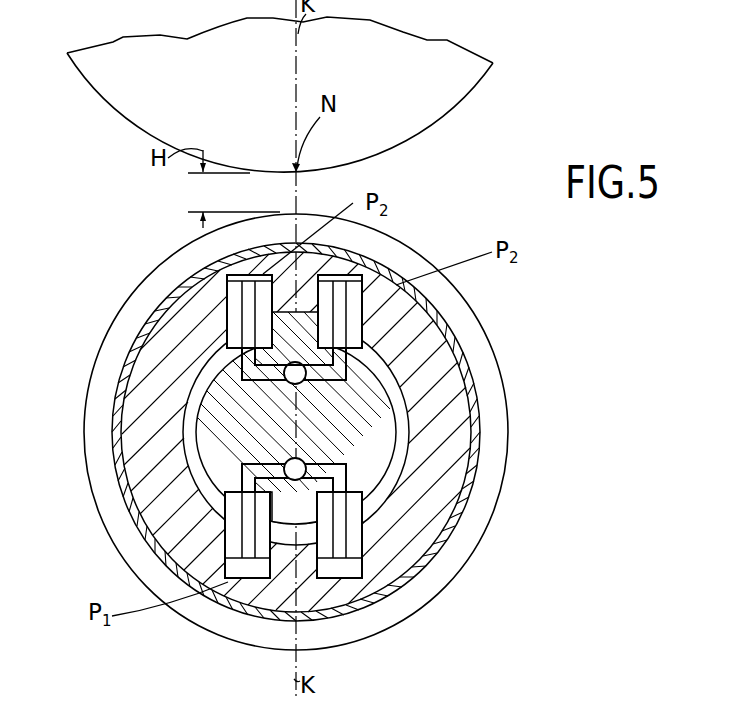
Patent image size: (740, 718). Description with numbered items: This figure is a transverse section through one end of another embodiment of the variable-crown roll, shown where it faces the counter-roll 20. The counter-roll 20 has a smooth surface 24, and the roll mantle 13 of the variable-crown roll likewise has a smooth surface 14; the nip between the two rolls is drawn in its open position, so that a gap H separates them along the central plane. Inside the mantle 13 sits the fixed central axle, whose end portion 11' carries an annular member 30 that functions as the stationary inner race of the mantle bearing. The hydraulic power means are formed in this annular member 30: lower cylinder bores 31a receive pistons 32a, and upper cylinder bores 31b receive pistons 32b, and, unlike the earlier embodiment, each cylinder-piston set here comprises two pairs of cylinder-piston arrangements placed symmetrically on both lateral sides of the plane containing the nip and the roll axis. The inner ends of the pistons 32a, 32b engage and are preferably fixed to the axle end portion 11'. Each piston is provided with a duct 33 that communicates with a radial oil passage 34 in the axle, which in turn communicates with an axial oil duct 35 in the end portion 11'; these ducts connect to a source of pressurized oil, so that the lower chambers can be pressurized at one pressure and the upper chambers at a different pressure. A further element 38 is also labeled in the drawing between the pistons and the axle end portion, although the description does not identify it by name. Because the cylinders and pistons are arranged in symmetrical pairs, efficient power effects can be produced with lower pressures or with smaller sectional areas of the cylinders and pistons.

The counter-roll 20 is at (455, 82).
The smooth surface 24 is at (447, 115).
The cylinder bore 31b is at (232, 276).
The cylinder bore 31a is at (340, 582).
The piston 32b is at (233, 307).
The piston 32a is at (262, 571).
The duct 33 is at (342, 330).
The radial oil passage 34 is at (415, 414).
The axial oil duct 35 is at (280, 402).
The balls 38 is at (232, 367).
The axle end portion 11' is at (393, 432).
The roll mantle 13 is at (495, 452).
The smooth surface 14 is at (104, 329).
The annular member 30 is at (447, 479).